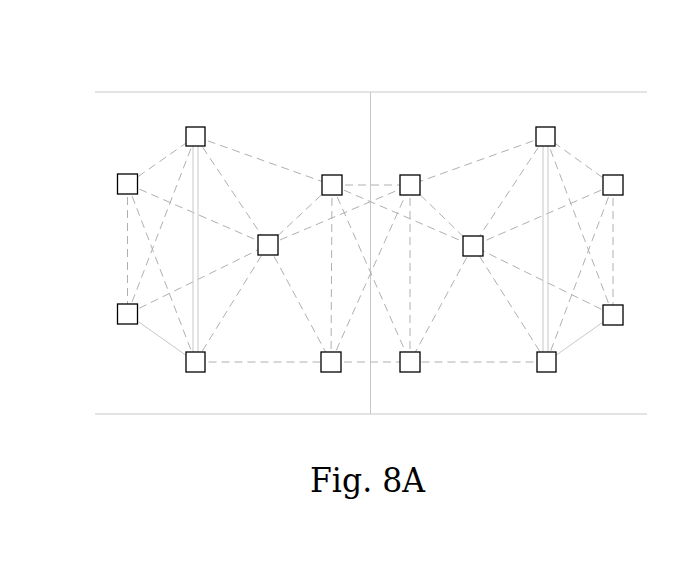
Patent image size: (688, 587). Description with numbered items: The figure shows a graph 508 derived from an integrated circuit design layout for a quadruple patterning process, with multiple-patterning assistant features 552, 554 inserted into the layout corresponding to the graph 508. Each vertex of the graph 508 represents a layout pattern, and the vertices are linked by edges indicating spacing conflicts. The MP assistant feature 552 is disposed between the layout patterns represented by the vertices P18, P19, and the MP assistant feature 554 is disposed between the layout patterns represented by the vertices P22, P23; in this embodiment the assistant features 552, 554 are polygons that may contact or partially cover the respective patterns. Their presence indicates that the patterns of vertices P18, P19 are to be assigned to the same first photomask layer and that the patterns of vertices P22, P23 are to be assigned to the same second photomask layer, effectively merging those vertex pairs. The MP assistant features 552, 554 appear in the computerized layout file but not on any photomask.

The graph 508 is at (118, 74).
The MP assistant feature 552 is at (195, 166).
The MP assistant feature 554 is at (552, 172).
The vertex P18 is at (176, 133).
The vertex P19 is at (176, 362).
The vertex P22 is at (568, 137).
The vertex P23 is at (568, 364).